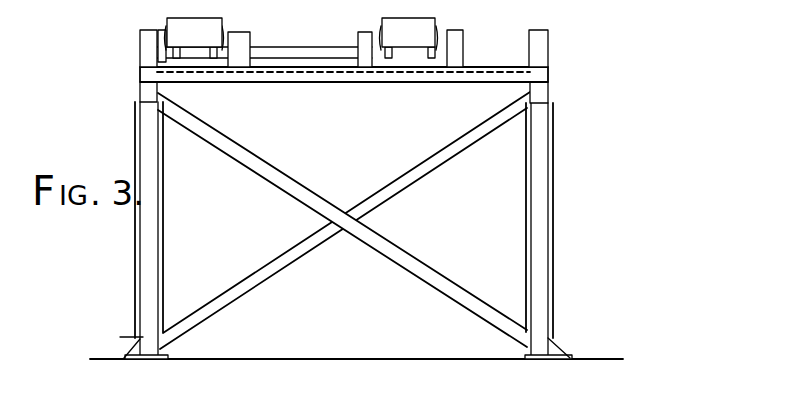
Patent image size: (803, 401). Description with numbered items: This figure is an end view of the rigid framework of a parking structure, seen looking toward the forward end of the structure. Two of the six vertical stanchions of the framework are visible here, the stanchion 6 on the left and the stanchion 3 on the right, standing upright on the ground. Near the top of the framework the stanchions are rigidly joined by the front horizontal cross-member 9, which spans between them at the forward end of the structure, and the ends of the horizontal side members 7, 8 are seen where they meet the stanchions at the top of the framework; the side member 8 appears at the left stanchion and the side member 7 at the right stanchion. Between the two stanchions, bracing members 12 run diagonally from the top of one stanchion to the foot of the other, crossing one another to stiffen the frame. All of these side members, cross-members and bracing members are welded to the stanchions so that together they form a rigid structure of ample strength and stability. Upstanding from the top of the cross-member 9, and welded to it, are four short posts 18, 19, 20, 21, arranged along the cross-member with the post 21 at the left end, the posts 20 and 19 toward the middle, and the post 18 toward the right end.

The vertical stanchion 3 is at (537, 157).
The vertical stanchion 6 is at (147, 132).
The horizontal side member 7 is at (540, 92).
The horizontal side member 8 is at (145, 90).
The front horizontal cross-member 9 is at (260, 78).
The bracing member 12 is at (375, 200).
The short post 18 is at (453, 48).
The short post 19 is at (363, 35).
The short post 20 is at (250, 33).
The short post 21 is at (148, 48).